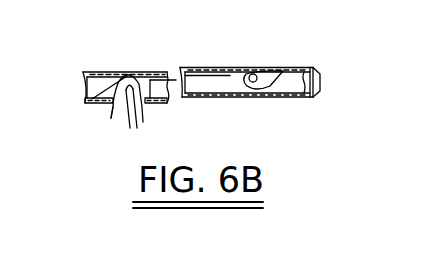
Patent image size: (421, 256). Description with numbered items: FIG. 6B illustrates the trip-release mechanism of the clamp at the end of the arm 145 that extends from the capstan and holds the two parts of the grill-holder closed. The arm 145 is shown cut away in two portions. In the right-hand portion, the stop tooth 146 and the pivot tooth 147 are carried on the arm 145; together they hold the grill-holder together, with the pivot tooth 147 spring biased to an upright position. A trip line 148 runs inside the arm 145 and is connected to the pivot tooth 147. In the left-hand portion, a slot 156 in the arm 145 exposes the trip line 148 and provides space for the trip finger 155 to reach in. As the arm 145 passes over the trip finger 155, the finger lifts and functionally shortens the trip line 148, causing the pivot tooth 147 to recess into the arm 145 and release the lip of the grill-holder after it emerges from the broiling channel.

The arm 145 is at (125, 73).
The stop tooth 146 is at (223, 72).
The pivot tooth 147 is at (283, 71).
The trip line 148 is at (158, 101).
The trip finger 155 is at (126, 107).
The slot 156 is at (106, 101).